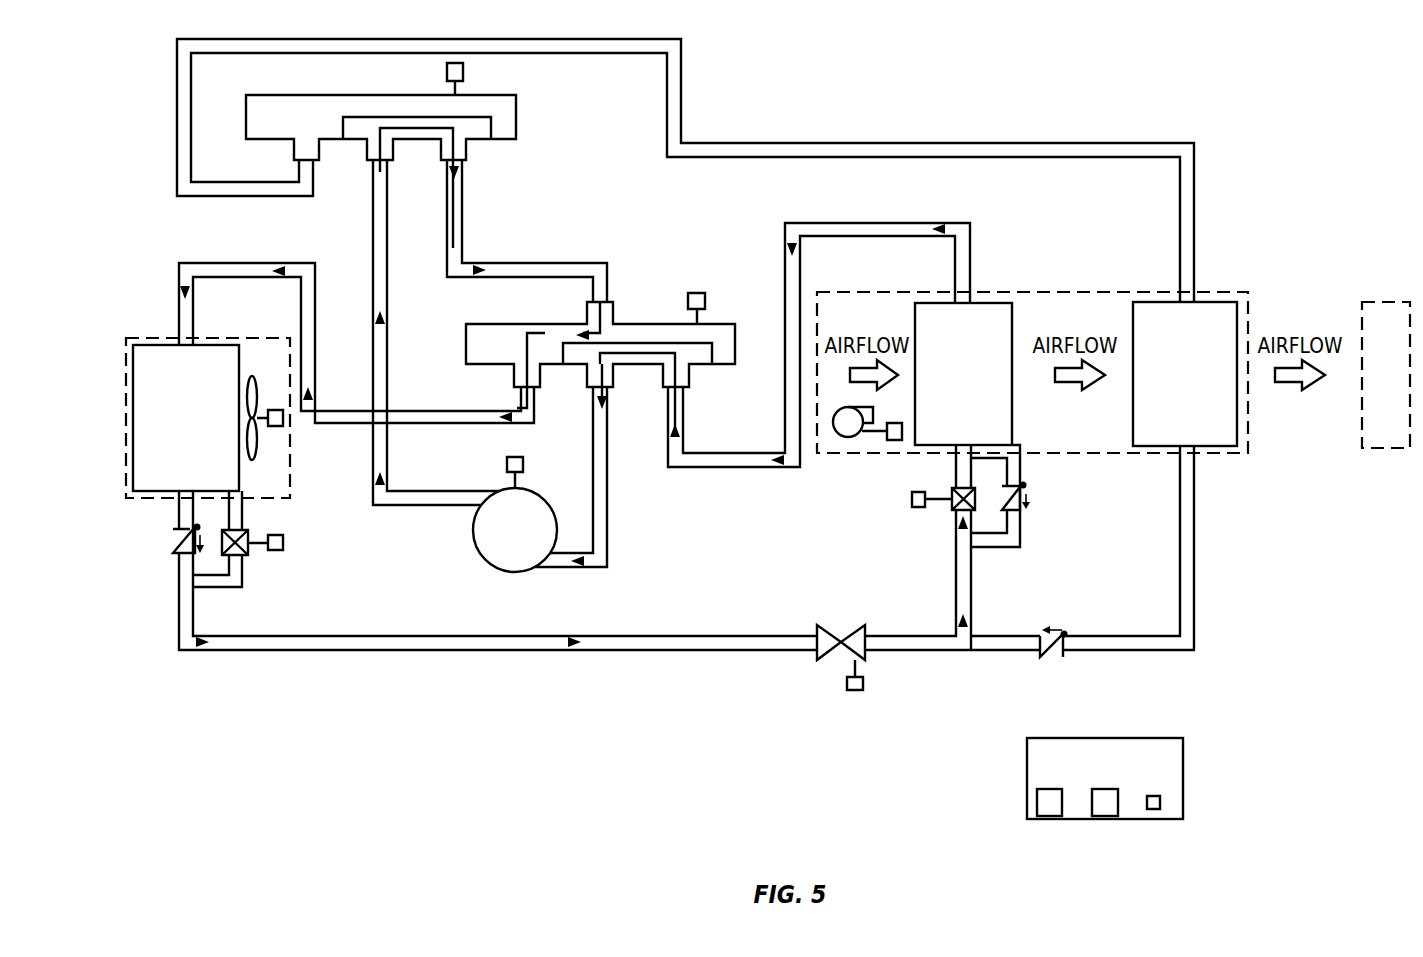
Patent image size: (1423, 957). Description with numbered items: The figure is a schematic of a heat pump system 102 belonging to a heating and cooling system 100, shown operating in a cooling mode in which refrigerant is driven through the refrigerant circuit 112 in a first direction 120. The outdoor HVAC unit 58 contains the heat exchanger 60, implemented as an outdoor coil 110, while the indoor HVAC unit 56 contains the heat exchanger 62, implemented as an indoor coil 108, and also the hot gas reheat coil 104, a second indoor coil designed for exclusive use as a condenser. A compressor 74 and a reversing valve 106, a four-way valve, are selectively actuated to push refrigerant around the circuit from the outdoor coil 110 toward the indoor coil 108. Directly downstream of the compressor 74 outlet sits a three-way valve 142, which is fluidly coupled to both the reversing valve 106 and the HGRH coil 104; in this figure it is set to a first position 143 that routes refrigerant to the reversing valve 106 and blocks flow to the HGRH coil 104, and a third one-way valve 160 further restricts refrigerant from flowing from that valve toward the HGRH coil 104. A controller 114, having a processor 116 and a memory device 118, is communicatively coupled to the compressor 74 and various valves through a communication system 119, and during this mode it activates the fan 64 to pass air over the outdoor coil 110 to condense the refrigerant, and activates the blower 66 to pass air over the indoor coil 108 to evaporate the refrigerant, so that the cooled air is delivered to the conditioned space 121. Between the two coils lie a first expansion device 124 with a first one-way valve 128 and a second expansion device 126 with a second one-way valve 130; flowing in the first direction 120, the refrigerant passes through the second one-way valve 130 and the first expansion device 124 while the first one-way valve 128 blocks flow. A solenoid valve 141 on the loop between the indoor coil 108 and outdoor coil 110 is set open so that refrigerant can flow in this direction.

The heating and cooling system 100 is at (752, 54).
The heat pump system 102 is at (752, 89).
The refrigerant circuit 112 is at (752, 124).
The hot gas reheat (HGRH) coil 104 is at (1133, 413).
The reversing valve 106 is at (510, 324).
The indoor coil 108 is at (1013, 427).
The outdoor coil 110 is at (126, 377).
The controller 114 is at (1105, 738).
The processor 116 is at (1048, 816).
The memory device 118 is at (1105, 816).
The communication system 119 is at (463, 70).
The first direction 120 is at (392, 127).
The conditioned space 121 is at (1371, 385).
The first expansion device 124 is at (952, 510).
The second expansion device 126 is at (237, 555).
The first one-way valve 128 is at (1028, 487).
The second one-way valve 130 is at (173, 542).
The solenoid valve 141 is at (865, 630).
The three-way valve 142 is at (516, 111).
The first position 143 is at (488, 147).
The third one-way valve 160 is at (1053, 655).
The indoor HVAC unit 56 is at (1040, 292).
The outdoor HVAC unit 58 is at (222, 338).
The heat exchanger 60 is at (133, 430).
The heat exchanger 62 is at (1013, 318).
The fan 64 is at (260, 387).
The blower 66 is at (848, 438).
The compressor 74 is at (474, 535).